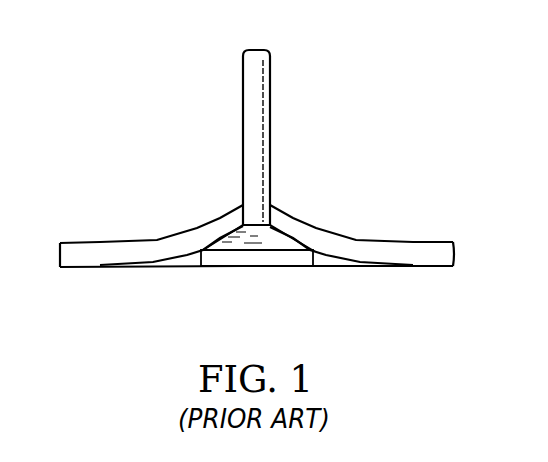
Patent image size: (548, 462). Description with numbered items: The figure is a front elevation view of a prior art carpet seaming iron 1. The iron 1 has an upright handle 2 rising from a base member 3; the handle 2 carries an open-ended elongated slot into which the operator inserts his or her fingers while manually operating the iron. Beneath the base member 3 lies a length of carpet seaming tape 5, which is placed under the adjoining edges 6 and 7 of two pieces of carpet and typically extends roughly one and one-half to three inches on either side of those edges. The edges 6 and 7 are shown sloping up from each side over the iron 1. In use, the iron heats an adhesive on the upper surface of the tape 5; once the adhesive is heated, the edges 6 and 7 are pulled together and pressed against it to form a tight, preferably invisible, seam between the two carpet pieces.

The carpet seaming iron 1 is at (283, 83).
The handle 2 is at (272, 140).
The base member 3 is at (237, 263).
The carpet seaming tape 5 is at (277, 273).
The adjoining edge of carpet 6 is at (387, 242).
The adjoining edge of carpet 7 is at (102, 242).